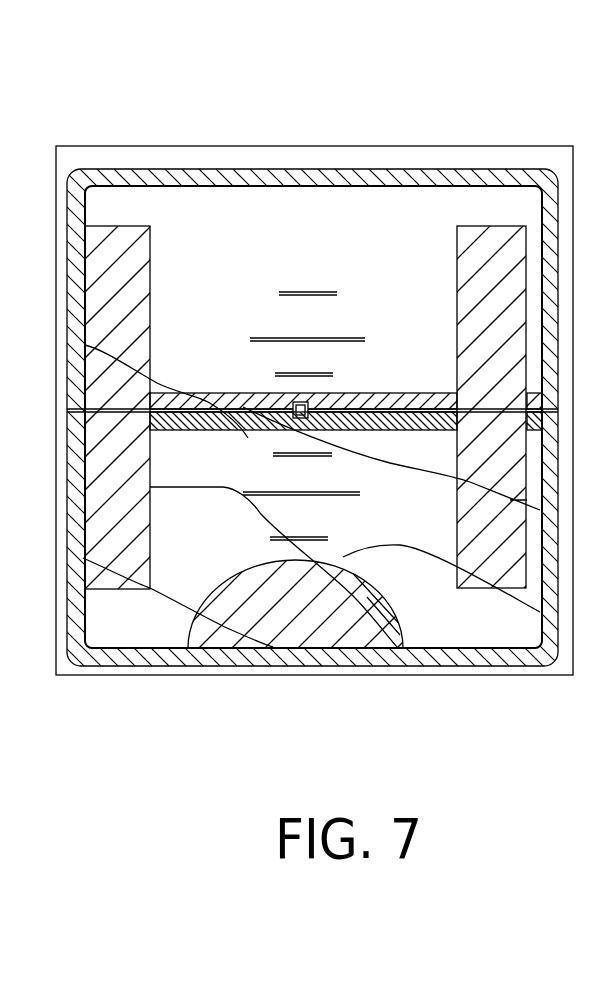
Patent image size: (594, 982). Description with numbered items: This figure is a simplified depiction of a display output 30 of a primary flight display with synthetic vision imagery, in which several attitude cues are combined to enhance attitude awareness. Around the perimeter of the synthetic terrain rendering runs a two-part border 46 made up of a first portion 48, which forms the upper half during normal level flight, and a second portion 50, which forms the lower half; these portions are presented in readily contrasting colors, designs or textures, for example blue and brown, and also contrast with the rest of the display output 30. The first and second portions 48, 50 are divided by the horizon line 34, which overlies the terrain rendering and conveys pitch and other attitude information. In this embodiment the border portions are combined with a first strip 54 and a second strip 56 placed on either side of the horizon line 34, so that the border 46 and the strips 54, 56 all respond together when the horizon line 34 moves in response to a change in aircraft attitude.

The display output 30 is at (300, 140).
The horizon line 34 is at (426, 430).
The border 46 is at (245, 179).
The first portion 48 is at (423, 170).
The second portion 50 is at (455, 653).
The first strip 54 is at (426, 393).
The second strip 56 is at (343, 430).